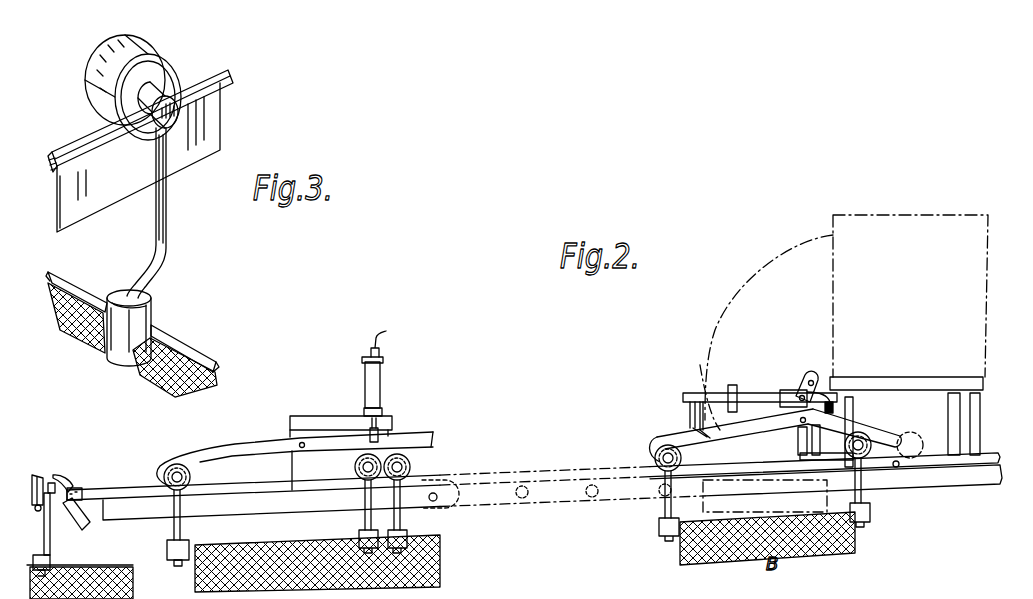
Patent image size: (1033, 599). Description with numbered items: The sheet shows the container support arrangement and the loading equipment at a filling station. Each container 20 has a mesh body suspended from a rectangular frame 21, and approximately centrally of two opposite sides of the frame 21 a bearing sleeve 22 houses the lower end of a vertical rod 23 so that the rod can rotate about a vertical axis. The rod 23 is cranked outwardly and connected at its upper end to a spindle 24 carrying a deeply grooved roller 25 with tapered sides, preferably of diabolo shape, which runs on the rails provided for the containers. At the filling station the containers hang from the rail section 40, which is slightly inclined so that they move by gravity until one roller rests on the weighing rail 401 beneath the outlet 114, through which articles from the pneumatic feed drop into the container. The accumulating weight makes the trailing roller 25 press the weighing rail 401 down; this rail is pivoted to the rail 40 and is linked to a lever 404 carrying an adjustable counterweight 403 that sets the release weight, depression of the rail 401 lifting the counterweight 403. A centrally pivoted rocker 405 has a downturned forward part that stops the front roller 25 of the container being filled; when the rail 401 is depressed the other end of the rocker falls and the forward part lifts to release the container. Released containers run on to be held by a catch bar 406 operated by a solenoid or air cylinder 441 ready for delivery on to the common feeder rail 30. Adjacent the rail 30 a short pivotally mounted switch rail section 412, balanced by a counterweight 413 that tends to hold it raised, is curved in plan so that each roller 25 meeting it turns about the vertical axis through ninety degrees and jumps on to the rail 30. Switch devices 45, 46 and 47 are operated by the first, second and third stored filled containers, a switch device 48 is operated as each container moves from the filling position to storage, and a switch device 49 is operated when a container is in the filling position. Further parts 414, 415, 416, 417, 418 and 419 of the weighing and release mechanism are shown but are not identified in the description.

In FIG. 3, the filled container 20 is at (200, 347).
In FIG. 2, the filled container 20 is at (403, 563).
In FIG. 3, the rectangular frame 21 is at (82, 287).
In FIG. 3, the bearing sleeve 22 is at (153, 310).
In FIG. 3, the vertical rod 23 is at (157, 222).
In FIG. 3, the spindle 24 is at (173, 113).
In FIG. 3, the deeply grooved roller 25 is at (147, 56).
In FIG. 2, the deeply grooved roller 25 is at (657, 455).
In FIG. 2, the common feeder rail 30 is at (40, 508).
In FIG. 3, the rail section 40 is at (207, 67).
In FIG. 2, the rail section 40 is at (525, 473).
In FIG. 2, the switch device 45 is at (175, 505).
In FIG. 2, the switch device 46 is at (405, 505).
In FIG. 2, the switch device 47 is at (522, 497).
In FIG. 2, the switch device 48 is at (593, 498).
In FIG. 2, the switch device 49 is at (657, 498).
In FIG. 2, the outlet 114 is at (782, 256).
In FIG. 2, the weighing rail 401 is at (882, 460).
In FIG. 2, the adjustable counterweight 403 is at (737, 385).
In FIG. 2, the lever 404 is at (767, 395).
In FIG. 2, the centrally pivoted rocker 405 is at (718, 430).
In FIG. 2, the catch bar 406 is at (233, 445).
In FIG. 2, the switch rail section 412 is at (72, 482).
In FIG. 2, the counterweight 413 is at (82, 532).
In FIG. 2, the arm 414 is at (907, 433).
In FIG. 2, the pivot 415 is at (897, 466).
In FIG. 2, the post 416 is at (805, 447).
In FIG. 2, the lever 417 is at (817, 377).
In FIG. 2, the bracket 418 is at (688, 405).
In FIG. 2, the pin 419 is at (835, 405).
In FIG. 2, the air cylinder 441 is at (377, 388).